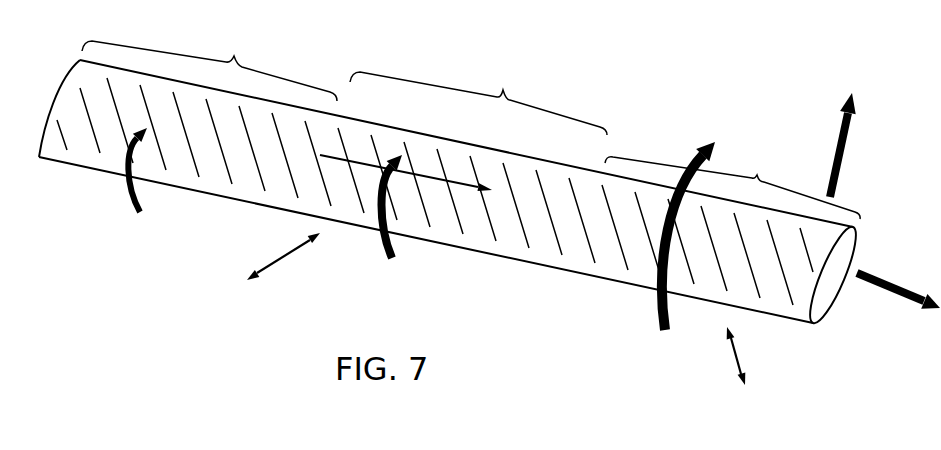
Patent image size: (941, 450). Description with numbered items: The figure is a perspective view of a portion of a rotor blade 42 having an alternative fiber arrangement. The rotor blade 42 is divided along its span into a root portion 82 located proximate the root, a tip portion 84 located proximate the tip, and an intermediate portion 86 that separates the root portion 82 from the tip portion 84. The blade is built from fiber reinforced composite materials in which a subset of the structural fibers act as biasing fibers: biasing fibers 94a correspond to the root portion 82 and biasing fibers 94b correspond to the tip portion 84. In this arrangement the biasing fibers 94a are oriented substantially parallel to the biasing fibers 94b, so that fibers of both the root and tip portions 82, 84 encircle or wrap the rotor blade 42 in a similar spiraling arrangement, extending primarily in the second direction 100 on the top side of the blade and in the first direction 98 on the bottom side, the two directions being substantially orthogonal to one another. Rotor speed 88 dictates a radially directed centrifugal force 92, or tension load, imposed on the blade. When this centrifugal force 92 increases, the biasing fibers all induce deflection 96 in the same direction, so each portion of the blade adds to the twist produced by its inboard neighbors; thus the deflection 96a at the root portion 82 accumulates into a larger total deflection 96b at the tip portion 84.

The rotor blade 42 is at (355, 160).
The root portion 82 is at (234, 56).
The tip portion 84 is at (757, 175).
The intermediate portion 86 is at (503, 90).
The rotor speed 88 is at (848, 155).
The centrifugal force 92 is at (880, 278).
The biasing fibers of the root portion 94a is at (257, 153).
The biasing fibers of the tip portion 94b is at (617, 242).
The deflection 96 is at (383, 247).
The deflection of the root portion 96a is at (128, 193).
The deflection of the tip portion 96b is at (658, 308).
The first direction 98 is at (283, 257).
The second direction 100 is at (738, 353).